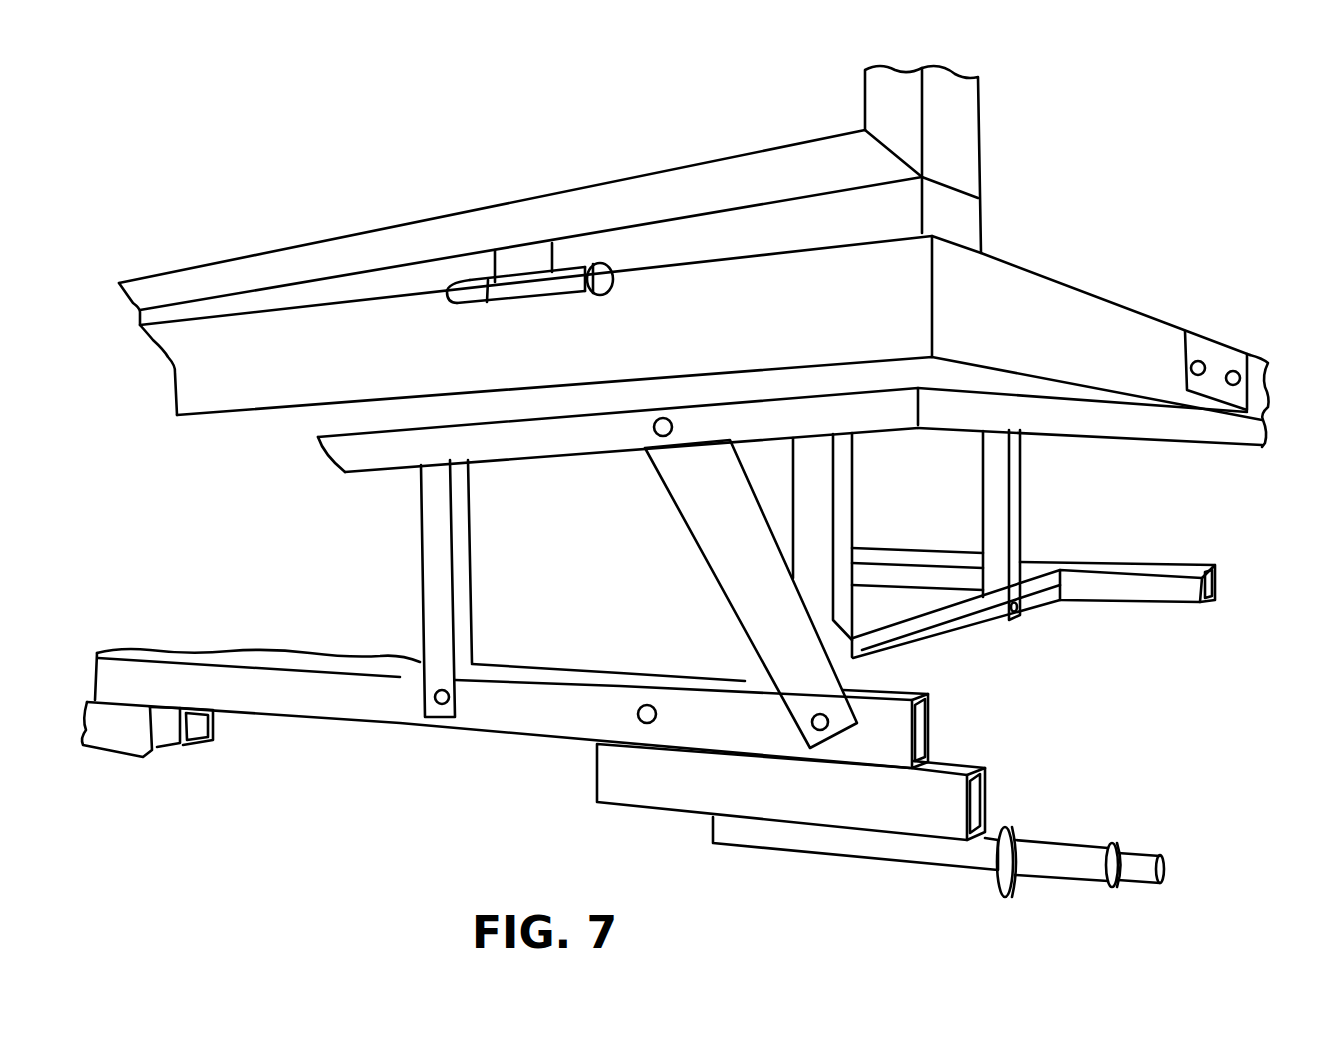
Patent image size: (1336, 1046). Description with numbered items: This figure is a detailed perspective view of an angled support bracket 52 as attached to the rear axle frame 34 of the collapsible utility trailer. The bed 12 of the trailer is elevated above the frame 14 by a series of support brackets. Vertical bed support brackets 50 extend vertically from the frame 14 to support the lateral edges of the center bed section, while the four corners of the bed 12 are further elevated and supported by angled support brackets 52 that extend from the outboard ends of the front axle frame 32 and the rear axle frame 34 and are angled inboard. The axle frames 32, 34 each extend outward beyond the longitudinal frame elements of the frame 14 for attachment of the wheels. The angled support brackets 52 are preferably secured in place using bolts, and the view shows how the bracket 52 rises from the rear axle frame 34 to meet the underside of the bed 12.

The bed 12 is at (1253, 353).
The frame 14 is at (133, 756).
The front axle frame 32 is at (1170, 562).
The rear axle frame 34 is at (347, 709).
The vertical bed support bracket 50 is at (1020, 497).
The angled support bracket 52 is at (850, 668).